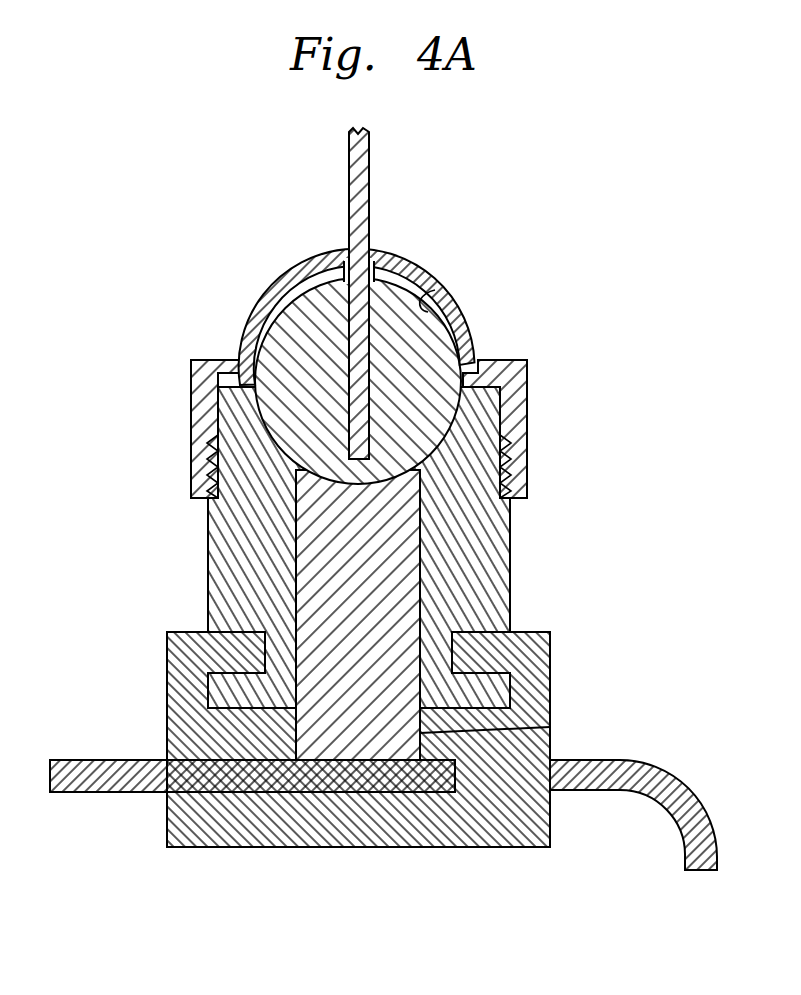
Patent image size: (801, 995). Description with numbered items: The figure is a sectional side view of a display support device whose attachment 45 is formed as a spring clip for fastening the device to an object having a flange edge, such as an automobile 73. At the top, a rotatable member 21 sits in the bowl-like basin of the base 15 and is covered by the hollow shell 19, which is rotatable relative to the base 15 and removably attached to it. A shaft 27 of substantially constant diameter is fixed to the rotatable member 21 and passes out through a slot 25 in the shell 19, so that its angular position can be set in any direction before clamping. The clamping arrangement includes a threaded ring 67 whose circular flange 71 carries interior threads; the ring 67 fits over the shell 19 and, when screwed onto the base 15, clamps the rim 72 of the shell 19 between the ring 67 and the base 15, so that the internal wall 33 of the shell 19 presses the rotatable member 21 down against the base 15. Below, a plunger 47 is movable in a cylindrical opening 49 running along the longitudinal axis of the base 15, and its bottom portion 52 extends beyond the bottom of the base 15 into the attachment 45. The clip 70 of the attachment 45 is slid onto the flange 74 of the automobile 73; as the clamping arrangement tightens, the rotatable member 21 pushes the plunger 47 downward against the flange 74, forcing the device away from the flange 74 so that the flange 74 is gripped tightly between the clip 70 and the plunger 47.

The base 15 is at (480, 551).
The hollow shell 19 is at (272, 302).
The rotatable member 21 is at (412, 357).
The slot 25 is at (370, 268).
The shaft 27 is at (368, 172).
The internal wall 33 is at (435, 290).
The attachment 45 is at (552, 682).
The plunger 47 is at (325, 572).
The cylindrical opening 49 is at (423, 602).
The bottom portion 52 is at (380, 757).
The threaded ring 67 is at (532, 412).
The clip 70 is at (580, 740).
The circular flange 71 is at (191, 452).
The rim 72 is at (240, 383).
The automobile 73 is at (680, 790).
The flange 74 is at (105, 773).